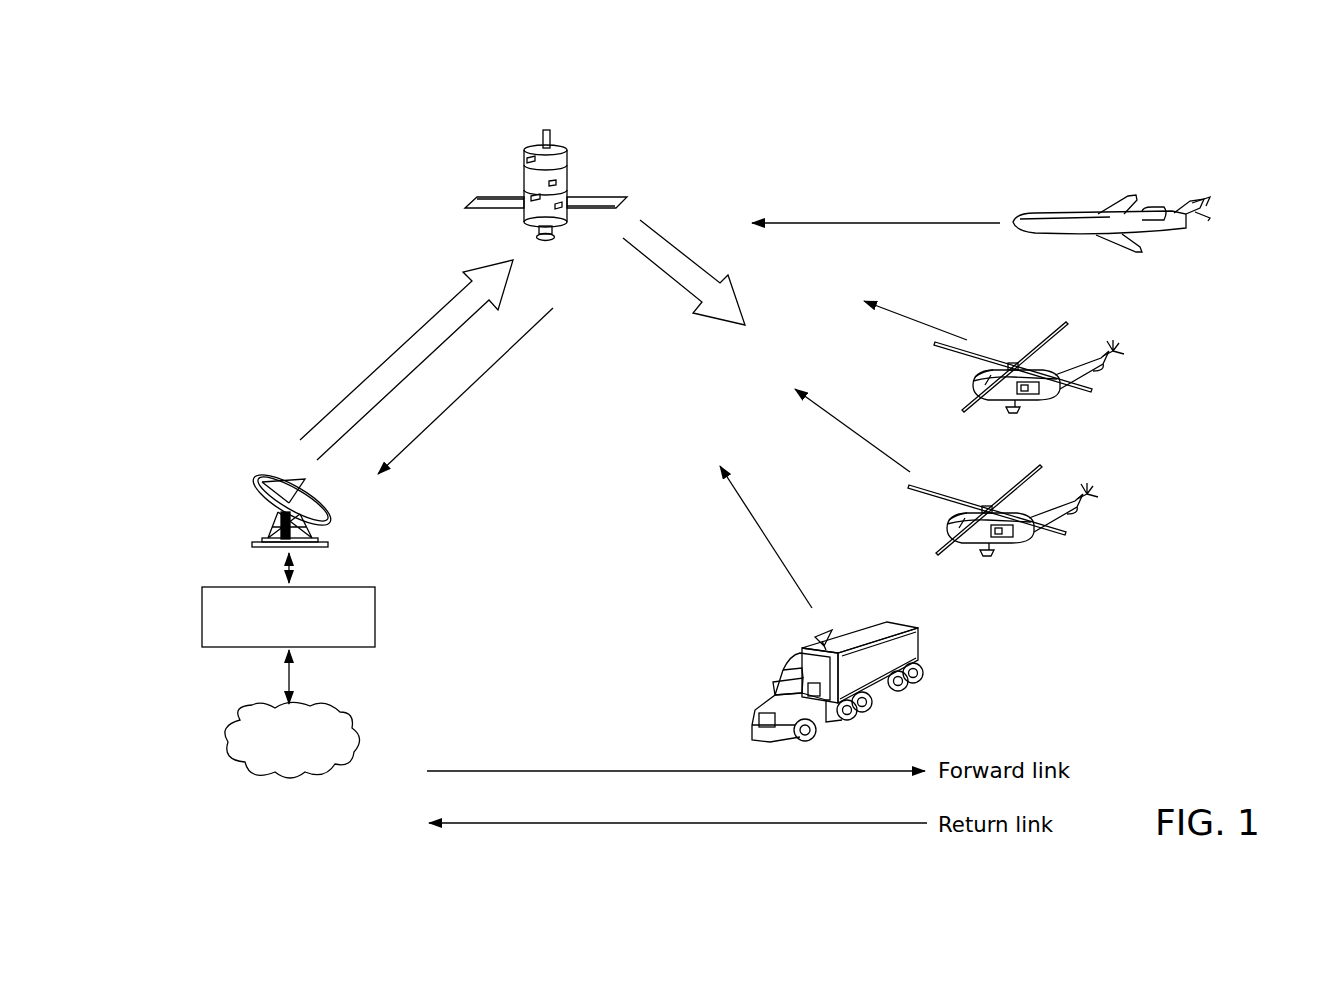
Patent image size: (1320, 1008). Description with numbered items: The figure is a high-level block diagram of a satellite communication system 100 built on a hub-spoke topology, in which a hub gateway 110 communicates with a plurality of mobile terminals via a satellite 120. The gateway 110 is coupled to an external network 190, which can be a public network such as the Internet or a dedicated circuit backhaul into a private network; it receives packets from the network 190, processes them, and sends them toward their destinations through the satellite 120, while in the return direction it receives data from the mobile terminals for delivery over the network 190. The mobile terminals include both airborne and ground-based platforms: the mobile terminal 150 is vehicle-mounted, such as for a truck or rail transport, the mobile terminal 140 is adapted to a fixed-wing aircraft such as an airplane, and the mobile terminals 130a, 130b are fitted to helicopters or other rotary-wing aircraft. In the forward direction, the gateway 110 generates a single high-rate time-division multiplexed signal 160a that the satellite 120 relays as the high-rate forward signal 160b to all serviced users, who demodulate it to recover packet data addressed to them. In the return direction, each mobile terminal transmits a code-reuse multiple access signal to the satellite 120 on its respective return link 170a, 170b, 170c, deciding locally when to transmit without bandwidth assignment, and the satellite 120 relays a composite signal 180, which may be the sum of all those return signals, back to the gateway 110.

The satellite communication system 100 is at (937, 108).
The gateway 110 is at (375, 612).
The satellite 120 is at (532, 148).
The mobile terminal 130a is at (1090, 378).
The mobile terminal 130b is at (1072, 520).
The mobile terminal 140 is at (1155, 208).
The mobile terminal 150 is at (920, 652).
The time-division multiplexed signal 160a is at (410, 337).
The high-rate forward signal 160b is at (670, 243).
The return link 170a is at (890, 312).
The return link 170b is at (838, 420).
The return link 170c is at (742, 510).
The composite signal 180 is at (407, 450).
The external network 190 is at (357, 738).